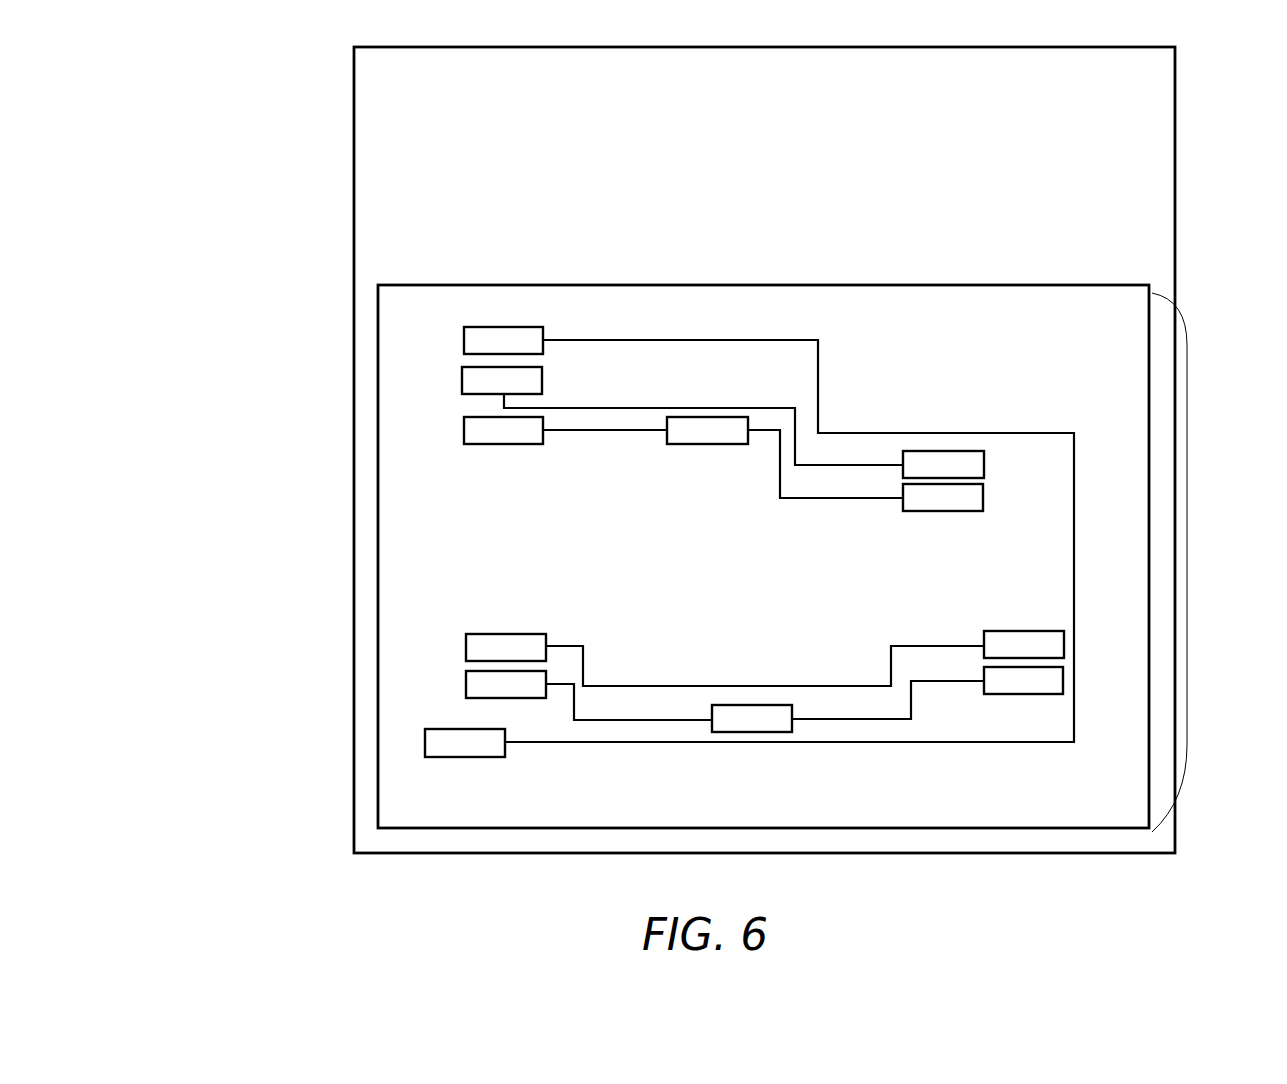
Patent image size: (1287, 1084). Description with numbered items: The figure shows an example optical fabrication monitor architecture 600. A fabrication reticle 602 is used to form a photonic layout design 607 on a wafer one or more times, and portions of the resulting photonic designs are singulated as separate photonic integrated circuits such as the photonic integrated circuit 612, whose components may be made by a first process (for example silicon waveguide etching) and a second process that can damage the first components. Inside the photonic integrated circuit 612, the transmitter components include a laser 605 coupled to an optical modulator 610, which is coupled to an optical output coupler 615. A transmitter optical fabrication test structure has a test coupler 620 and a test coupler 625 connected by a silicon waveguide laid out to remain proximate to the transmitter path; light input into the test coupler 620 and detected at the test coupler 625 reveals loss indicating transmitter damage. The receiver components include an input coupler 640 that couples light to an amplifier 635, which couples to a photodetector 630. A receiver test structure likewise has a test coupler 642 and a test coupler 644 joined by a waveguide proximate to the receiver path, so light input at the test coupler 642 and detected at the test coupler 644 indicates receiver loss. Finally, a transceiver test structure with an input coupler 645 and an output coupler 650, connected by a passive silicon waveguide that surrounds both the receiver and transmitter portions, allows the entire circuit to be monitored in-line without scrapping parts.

The optical fabrication monitor architecture 600 is at (168, 88).
The fabrication reticle 602 is at (354, 145).
The photonic layout design 607 is at (1187, 567).
The photonic integrated circuit 612 is at (382, 392).
The laser 605 is at (524, 440).
The optical modulator 610 is at (728, 440).
The optical output coupler 615 is at (964, 508).
The test coupler 620 is at (682, 415).
The test coupler 625 is at (964, 474).
The photodetector 630 is at (527, 694).
The amplifier 635 is at (773, 728).
The input coupler 640 is at (1045, 690).
The test coupler 642 is at (1045, 654).
The test coupler 644 is at (527, 658).
The input coupler 645 is at (486, 752).
The output coupler 650 is at (524, 350).